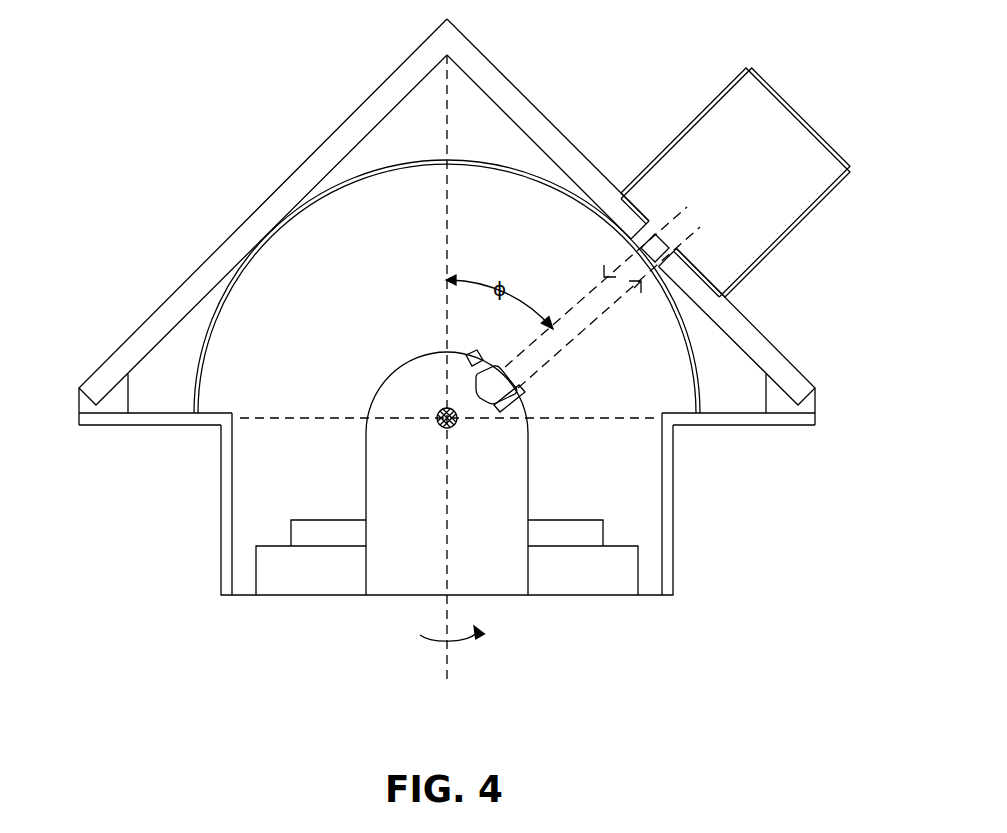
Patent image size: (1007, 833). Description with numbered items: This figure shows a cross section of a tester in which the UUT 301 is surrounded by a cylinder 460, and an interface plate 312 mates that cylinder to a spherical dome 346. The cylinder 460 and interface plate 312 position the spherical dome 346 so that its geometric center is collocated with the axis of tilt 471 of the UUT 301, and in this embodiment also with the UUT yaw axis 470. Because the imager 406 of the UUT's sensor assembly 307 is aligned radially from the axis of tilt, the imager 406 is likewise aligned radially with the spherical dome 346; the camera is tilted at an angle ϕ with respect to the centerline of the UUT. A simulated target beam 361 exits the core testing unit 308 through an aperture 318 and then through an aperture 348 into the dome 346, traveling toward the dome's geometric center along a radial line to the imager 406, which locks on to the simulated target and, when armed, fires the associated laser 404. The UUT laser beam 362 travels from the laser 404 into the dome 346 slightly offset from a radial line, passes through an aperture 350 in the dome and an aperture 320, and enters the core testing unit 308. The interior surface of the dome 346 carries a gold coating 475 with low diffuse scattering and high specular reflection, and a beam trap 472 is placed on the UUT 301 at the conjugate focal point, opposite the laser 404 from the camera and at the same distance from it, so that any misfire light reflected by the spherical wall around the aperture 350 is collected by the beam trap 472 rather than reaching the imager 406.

The UUT 301 is at (428, 553).
The sensor assembly 307 is at (296, 91).
The core testing unit 308 is at (767, 84).
The interface plate 312 is at (146, 426).
The aperture 318 is at (634, 249).
The aperture 320 is at (677, 248).
The spherical dome 346 is at (736, 342).
The aperture 348 is at (622, 250).
The aperture 350 is at (638, 292).
The simulated target beam 361 is at (583, 300).
The UUT laser beam 362 is at (561, 350).
The laser 404 is at (524, 396).
The imager 406 is at (478, 405).
The cylinder 460 is at (674, 480).
The UUT yaw axis 470 is at (448, 604).
The axis of tilt 471 is at (441, 428).
The beam trap 472 is at (471, 351).
The gold coating 475 is at (694, 394).